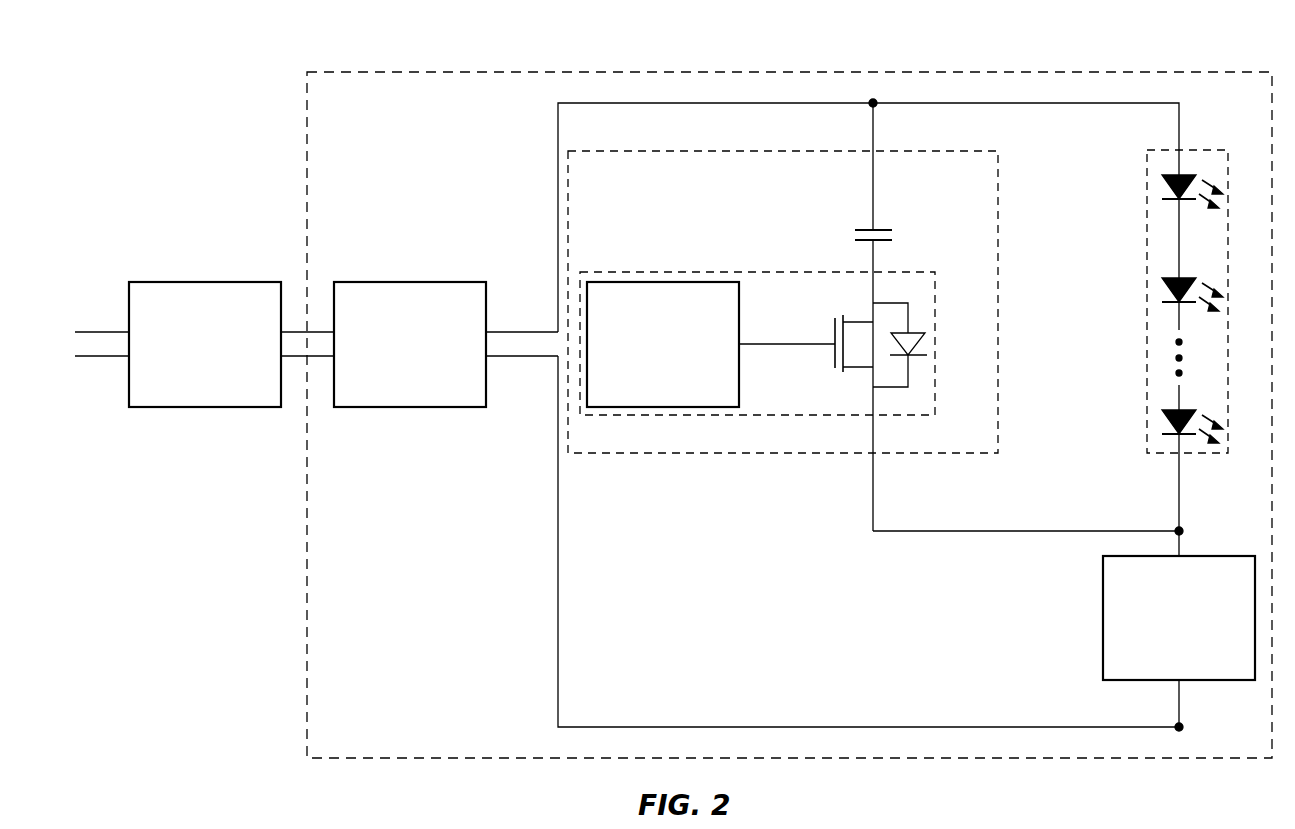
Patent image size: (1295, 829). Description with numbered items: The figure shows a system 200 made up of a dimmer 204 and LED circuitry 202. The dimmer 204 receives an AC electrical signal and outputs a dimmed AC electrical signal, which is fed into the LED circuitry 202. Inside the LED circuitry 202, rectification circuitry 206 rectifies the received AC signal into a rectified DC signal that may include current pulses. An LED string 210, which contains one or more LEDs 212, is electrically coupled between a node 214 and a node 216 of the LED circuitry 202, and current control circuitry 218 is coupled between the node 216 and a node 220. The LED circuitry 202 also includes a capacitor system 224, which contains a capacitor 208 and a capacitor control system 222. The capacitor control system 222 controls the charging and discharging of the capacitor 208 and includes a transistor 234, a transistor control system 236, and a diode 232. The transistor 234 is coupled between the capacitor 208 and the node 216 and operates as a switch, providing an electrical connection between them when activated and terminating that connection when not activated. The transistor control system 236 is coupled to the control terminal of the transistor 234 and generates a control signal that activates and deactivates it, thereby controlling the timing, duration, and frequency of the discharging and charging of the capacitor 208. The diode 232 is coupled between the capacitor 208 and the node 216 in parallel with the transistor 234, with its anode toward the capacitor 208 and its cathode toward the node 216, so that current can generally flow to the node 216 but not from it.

The system 200 is at (134, 78).
The LED circuitry 202 is at (1224, 72).
The dimmer 204 is at (190, 367).
The rectification circuitry 206 is at (395, 379).
The capacitor 208 is at (882, 229).
The LED string 210 is at (1224, 150).
The LEDs 212 is at (1193, 290).
The node 214 is at (873, 103).
The node 216 is at (1179, 531).
The current control circuitry 218 is at (1164, 655).
The node 220 is at (1183, 727).
The capacitor control system 222 is at (936, 276).
The capacitor system 224 is at (880, 151).
The diode 232 is at (918, 340).
The transistor 234 is at (830, 364).
The transistor control system 236 is at (648, 394).